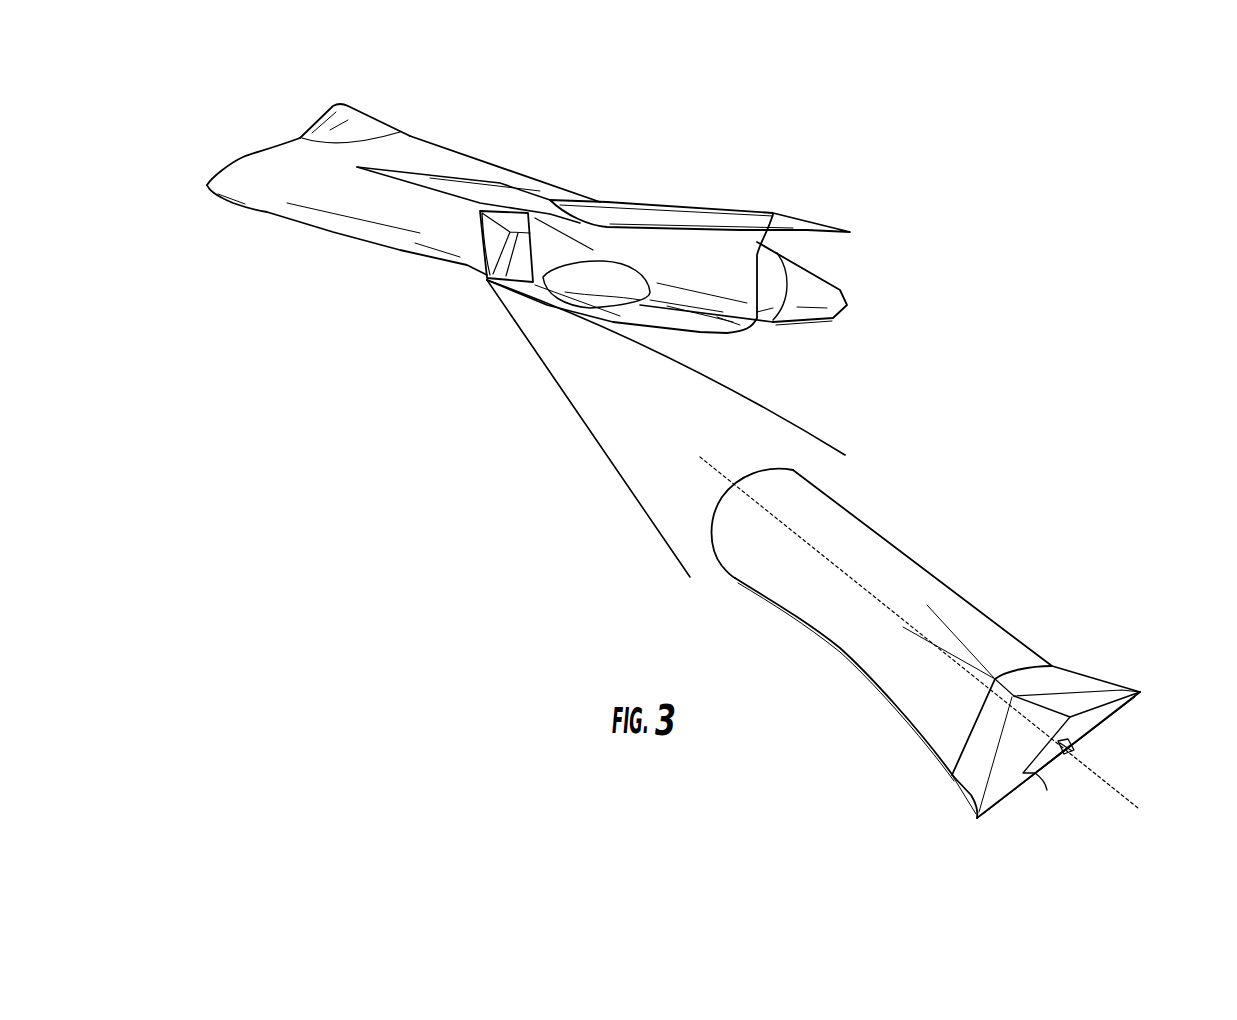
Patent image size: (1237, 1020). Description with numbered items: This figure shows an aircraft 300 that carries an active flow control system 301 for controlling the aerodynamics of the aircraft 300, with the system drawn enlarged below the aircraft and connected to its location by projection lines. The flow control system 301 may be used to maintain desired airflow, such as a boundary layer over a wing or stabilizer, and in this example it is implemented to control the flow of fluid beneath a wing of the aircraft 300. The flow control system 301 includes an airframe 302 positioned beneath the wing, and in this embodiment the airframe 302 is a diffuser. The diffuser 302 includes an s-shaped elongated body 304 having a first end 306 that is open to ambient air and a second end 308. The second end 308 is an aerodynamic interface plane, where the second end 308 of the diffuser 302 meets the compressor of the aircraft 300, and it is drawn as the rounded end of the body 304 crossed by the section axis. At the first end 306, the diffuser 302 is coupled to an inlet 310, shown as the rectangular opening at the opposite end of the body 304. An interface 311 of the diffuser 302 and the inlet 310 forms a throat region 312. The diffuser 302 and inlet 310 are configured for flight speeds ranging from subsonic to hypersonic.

The aircraft 300 is at (583, 133).
The active flow control system 301 is at (1085, 498).
The airframe 302 is at (933, 571).
The s-shaped elongated body 304 is at (834, 636).
The first end 306 is at (988, 783).
The second end 308 is at (768, 466).
The inlet 310 is at (1078, 754).
The interface 311 is at (1053, 665).
The throat region 312 is at (1028, 684).